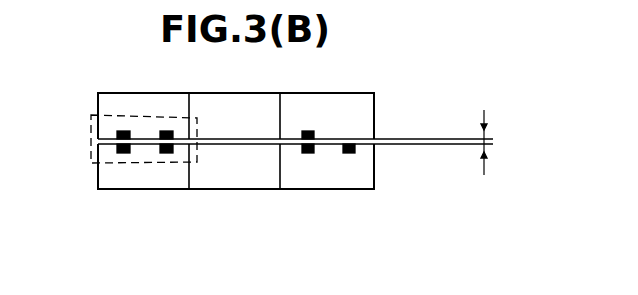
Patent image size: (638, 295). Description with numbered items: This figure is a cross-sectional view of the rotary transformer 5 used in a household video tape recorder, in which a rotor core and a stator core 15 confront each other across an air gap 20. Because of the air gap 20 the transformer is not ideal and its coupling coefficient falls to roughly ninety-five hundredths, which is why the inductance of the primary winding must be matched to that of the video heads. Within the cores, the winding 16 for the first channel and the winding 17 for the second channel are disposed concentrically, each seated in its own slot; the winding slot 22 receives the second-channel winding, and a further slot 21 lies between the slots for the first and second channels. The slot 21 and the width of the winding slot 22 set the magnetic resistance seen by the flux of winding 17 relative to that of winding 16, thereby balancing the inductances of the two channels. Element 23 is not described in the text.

The rotary transformer 5 is at (90, 132).
The stator core 15 is at (374, 100).
The winding for the first channel 16 is at (304, 131).
The winding for the second channel 17 is at (124, 131).
The air gap 20 is at (500, 142).
The slot 21 is at (305, 152).
The winding slot for the second channel 22 is at (349, 153).
The lower substrate plate 23 is at (374, 185).